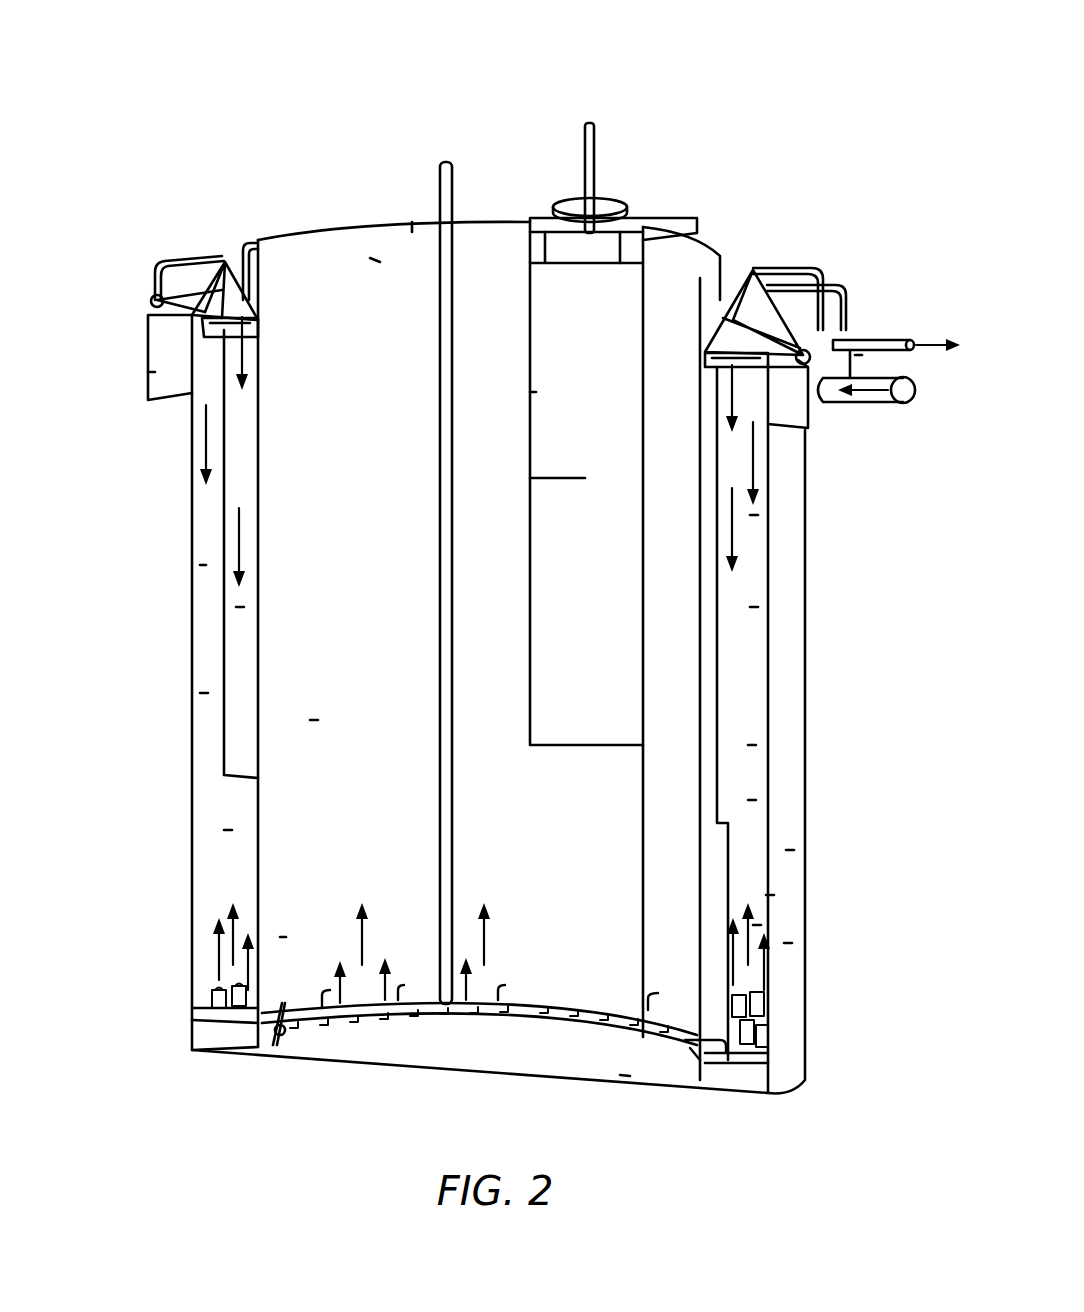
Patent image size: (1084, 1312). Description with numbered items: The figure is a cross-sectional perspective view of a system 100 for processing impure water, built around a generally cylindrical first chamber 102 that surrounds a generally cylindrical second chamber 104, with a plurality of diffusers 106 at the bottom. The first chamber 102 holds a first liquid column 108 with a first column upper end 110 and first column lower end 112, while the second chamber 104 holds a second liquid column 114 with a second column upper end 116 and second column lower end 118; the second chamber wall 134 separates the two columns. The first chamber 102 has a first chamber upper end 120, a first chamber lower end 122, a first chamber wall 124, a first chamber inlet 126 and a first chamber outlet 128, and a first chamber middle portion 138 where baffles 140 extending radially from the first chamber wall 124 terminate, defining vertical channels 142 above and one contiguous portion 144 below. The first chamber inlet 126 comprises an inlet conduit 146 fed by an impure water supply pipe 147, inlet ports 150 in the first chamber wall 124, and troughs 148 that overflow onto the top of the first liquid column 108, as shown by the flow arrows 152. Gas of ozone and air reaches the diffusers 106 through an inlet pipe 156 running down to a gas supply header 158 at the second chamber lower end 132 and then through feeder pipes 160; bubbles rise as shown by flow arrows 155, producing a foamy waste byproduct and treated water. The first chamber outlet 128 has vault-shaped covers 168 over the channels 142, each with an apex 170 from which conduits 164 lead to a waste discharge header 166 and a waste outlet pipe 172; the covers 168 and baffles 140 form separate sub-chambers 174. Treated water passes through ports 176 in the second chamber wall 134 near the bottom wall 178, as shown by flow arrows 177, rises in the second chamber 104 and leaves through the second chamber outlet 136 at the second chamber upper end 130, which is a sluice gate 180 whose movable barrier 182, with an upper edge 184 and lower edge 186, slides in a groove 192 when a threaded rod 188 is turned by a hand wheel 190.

The system for processing impure water 100 is at (772, 92).
The first chamber 102 is at (790, 570).
The second chamber 104 is at (308, 227).
The diffusers 106 is at (210, 1010).
The first liquid column 108 is at (755, 607).
The first column upper end 110 is at (755, 515).
The first column lower end 112 is at (757, 925).
The second liquid column 114 is at (315, 720).
The second column upper end 116 is at (288, 465).
The second column lower end 118 is at (283, 937).
The first chamber upper end 120 is at (790, 485).
The first chamber lower end 122 is at (788, 943).
The first chamber wall 124 is at (790, 850).
The first chamber inlet 126 is at (170, 375).
The first chamber outlet 128 is at (735, 330).
The second chamber upper end 130 is at (375, 258).
The second chamber lower end 132 is at (278, 1040).
The second chamber wall 134 is at (412, 222).
The second chamber outlet 136 is at (595, 280).
The first chamber middle portion 138 is at (770, 895).
The baffles 140 is at (240, 607).
The vertical channels 142 is at (205, 693).
The contiguous portion 144 is at (228, 830).
The inlet conduit 146 is at (160, 345).
The impure water supply pipe 147 is at (895, 400).
The trough 148 is at (265, 330).
The inlet ports 150 is at (860, 355).
The flow arrows 152 is at (265, 365).
The flow arrows 155 is at (205, 940).
The inlet pipe 156 is at (438, 183).
The gas supply header 158 is at (548, 1010).
The feeder pipes 160 is at (500, 990).
The conduits 164 is at (160, 275).
The waste discharge header 166 is at (190, 300).
The covers 168 is at (270, 292).
The apex 170 is at (225, 258).
The waste outlet pipe 172 is at (880, 330).
The sub-chambers 174 is at (203, 565).
The ports 176 is at (405, 1030).
The flow arrows 177 is at (327, 1003).
The bottom wall 178 is at (625, 1075).
The sluice gate 180 is at (540, 282).
The movable barrier 182 is at (535, 392).
The upper edge 184 is at (565, 268).
The lower edge 186 is at (585, 480).
The threaded rod 188 is at (596, 125).
The hand wheel 190 is at (606, 205).
The groove 192 is at (568, 655).